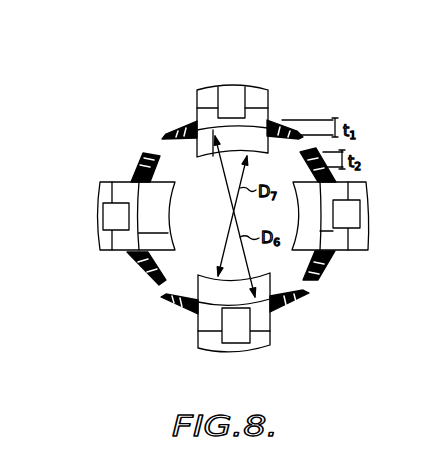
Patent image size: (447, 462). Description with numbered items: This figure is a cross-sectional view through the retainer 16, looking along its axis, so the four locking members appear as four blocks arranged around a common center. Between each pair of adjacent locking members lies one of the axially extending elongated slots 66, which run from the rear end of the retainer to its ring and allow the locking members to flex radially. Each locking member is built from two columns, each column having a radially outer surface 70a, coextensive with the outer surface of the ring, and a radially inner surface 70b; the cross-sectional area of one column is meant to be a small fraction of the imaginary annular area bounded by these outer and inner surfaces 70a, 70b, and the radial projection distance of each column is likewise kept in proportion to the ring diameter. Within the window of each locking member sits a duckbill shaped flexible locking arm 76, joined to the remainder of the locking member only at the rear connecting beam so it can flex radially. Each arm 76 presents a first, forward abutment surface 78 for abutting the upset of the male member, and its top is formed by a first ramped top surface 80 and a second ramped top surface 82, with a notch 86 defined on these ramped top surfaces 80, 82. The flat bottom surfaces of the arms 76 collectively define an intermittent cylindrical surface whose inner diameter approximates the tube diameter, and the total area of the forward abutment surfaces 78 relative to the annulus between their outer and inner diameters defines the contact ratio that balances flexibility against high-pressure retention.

The retainer 16 is at (238, 181).
The axially extending elongated slot 66 is at (309, 292).
The radially outer surface 70a is at (326, 270).
The radially inner surface 70b is at (157, 167).
The duckbill shaped flexible locking arm 76 is at (152, 220).
The first abutment surface 78 is at (258, 135).
The first ramped top surface 80 is at (197, 113).
The second ramped top surface 82 is at (230, 112).
The notch 86 is at (230, 97).